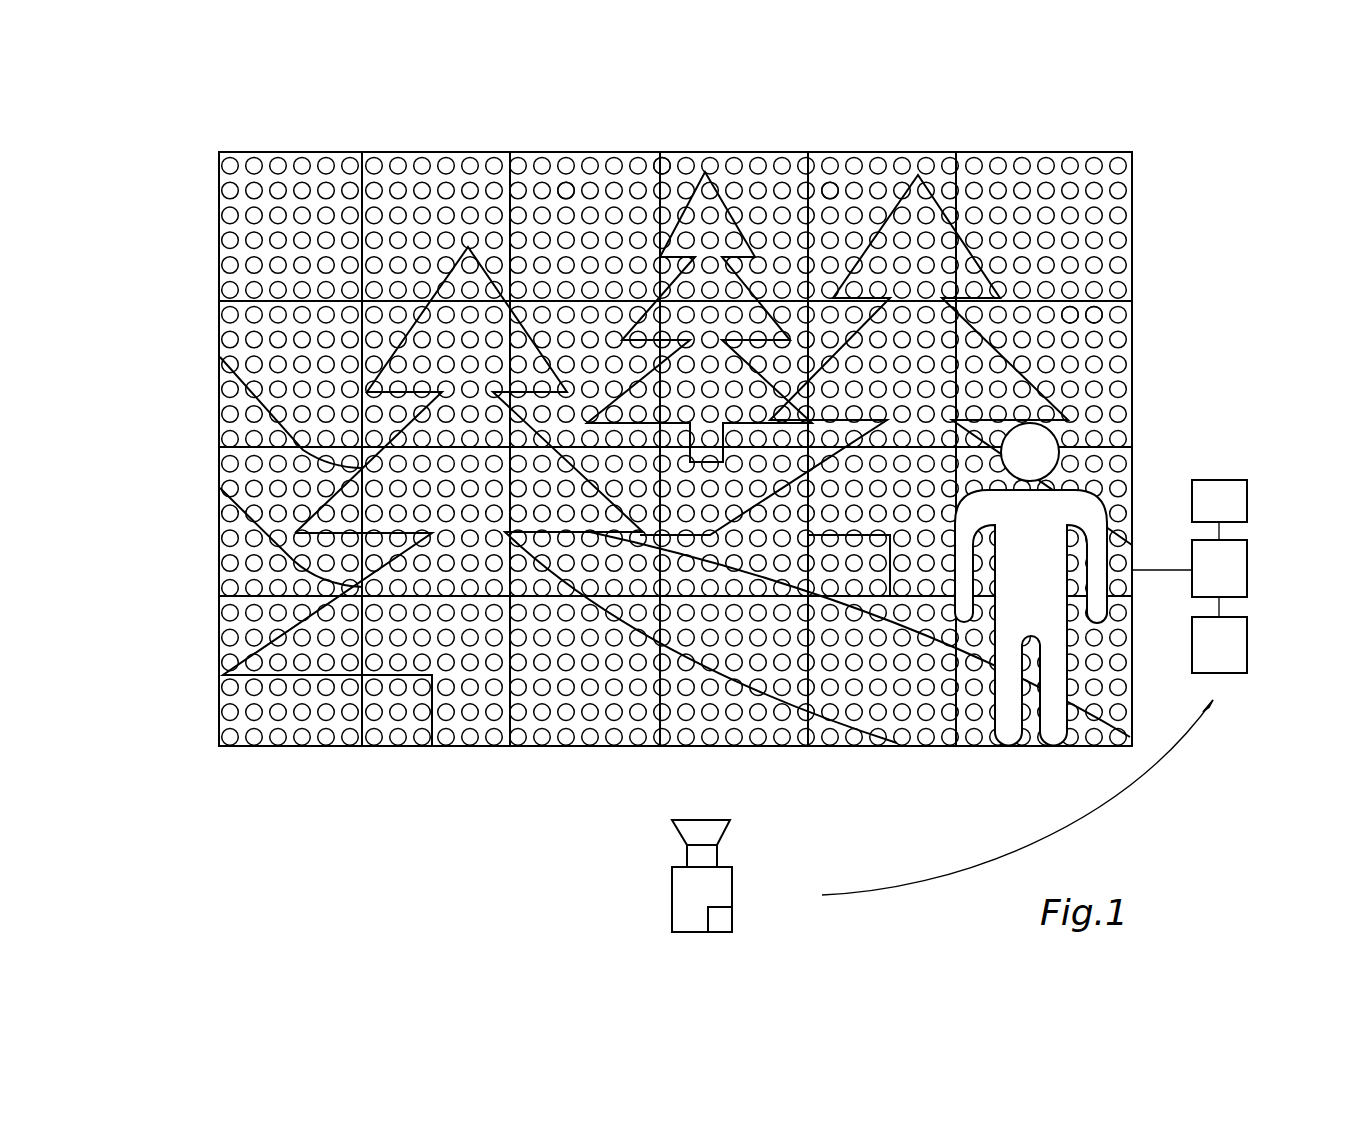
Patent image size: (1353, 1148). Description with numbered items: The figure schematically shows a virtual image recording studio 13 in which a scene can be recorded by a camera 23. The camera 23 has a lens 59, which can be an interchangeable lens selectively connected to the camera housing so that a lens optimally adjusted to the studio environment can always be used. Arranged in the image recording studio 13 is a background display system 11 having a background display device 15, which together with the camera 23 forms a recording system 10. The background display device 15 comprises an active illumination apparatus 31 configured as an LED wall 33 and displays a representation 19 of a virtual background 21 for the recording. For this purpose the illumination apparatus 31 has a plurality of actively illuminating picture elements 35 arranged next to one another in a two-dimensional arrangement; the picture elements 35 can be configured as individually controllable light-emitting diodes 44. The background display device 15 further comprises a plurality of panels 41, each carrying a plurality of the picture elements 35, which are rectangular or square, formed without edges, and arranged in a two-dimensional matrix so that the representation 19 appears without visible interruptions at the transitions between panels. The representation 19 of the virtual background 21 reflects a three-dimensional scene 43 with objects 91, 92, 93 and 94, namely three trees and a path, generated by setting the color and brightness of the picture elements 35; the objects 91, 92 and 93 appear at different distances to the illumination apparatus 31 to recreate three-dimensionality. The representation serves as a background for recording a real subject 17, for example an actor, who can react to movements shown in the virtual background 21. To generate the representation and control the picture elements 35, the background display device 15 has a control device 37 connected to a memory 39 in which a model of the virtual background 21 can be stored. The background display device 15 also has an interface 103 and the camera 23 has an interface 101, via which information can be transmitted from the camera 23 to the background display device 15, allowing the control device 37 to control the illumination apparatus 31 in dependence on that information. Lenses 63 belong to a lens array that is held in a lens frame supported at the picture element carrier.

The recording system 10 is at (178, 563).
The background display system 11 is at (1188, 240).
The virtual image recording studio 13 is at (150, 158).
The background display device 15 is at (1033, 153).
The real subject 17 is at (1092, 507).
The representation 19 is at (1182, 345).
The virtual background 21 is at (1182, 345).
The three-dimensional scene 43 is at (1087, 327).
The camera 23 is at (722, 895).
The active illumination apparatus 31 is at (1196, 432).
The LED wall 33 is at (1127, 177).
The picture element 35 is at (682, 131).
The light-emitting diode 44 is at (567, 190).
The control device 37 is at (1189, 578).
The memory 39 is at (1219, 510).
The panel 41 is at (292, 178).
The lens 59 is at (722, 817).
The lens 63 is at (1143, 292).
The object 91 is at (465, 245).
The object 92 is at (938, 183).
The object 93 is at (727, 178).
The object 94 is at (230, 378).
The interface 101 is at (722, 922).
The interface 103 is at (1248, 652).